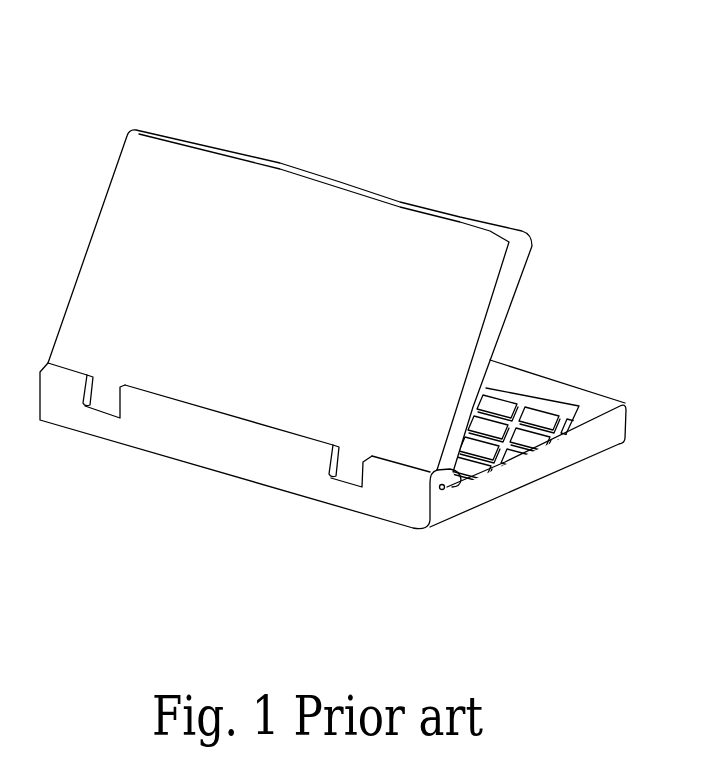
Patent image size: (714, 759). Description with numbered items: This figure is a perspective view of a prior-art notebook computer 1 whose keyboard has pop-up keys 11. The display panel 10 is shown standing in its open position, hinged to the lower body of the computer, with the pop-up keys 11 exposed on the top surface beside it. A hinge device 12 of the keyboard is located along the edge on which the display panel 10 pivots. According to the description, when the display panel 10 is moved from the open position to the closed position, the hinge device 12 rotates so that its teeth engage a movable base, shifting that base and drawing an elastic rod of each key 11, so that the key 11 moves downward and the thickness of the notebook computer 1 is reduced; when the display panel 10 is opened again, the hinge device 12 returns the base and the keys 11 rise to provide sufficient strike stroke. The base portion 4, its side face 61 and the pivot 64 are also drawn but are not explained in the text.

The notebook computer 1 is at (505, 70).
The display panel 10 is at (462, 247).
The pop-up keys 11 is at (510, 393).
The hinge device 12 is at (103, 397).
The base / main body 4 is at (603, 412).
The side wall of base 61 is at (573, 450).
The hinge pivot 64 is at (444, 490).